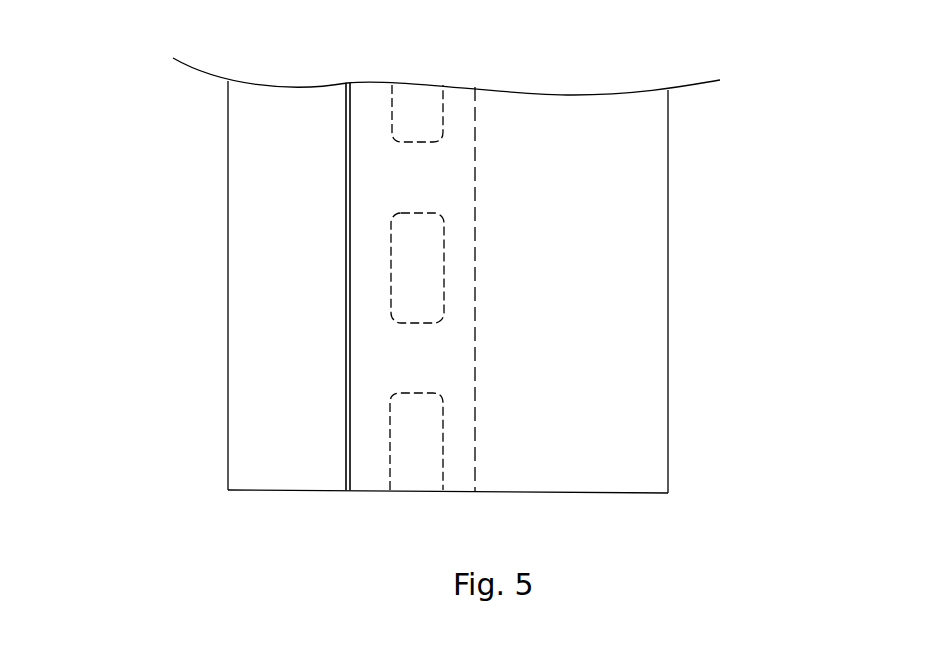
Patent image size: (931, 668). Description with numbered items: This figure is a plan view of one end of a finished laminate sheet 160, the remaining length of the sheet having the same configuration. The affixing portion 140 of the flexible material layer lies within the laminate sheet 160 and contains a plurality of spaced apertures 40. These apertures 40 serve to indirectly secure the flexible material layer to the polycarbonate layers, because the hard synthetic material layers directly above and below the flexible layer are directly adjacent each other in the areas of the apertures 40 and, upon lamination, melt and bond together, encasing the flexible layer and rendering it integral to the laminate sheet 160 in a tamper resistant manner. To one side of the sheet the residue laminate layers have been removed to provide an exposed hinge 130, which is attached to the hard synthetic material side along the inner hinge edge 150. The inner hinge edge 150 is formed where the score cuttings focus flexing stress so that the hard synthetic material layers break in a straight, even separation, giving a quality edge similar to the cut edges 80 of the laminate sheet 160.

The spaced apertures 40 is at (375, 118).
The cut edges 80 is at (227, 450).
The exposed hinge 130 is at (268, 277).
The affixing portion 140 is at (427, 108).
The inner hinge edge 150 is at (346, 328).
The laminate sheet 160 is at (372, 515).